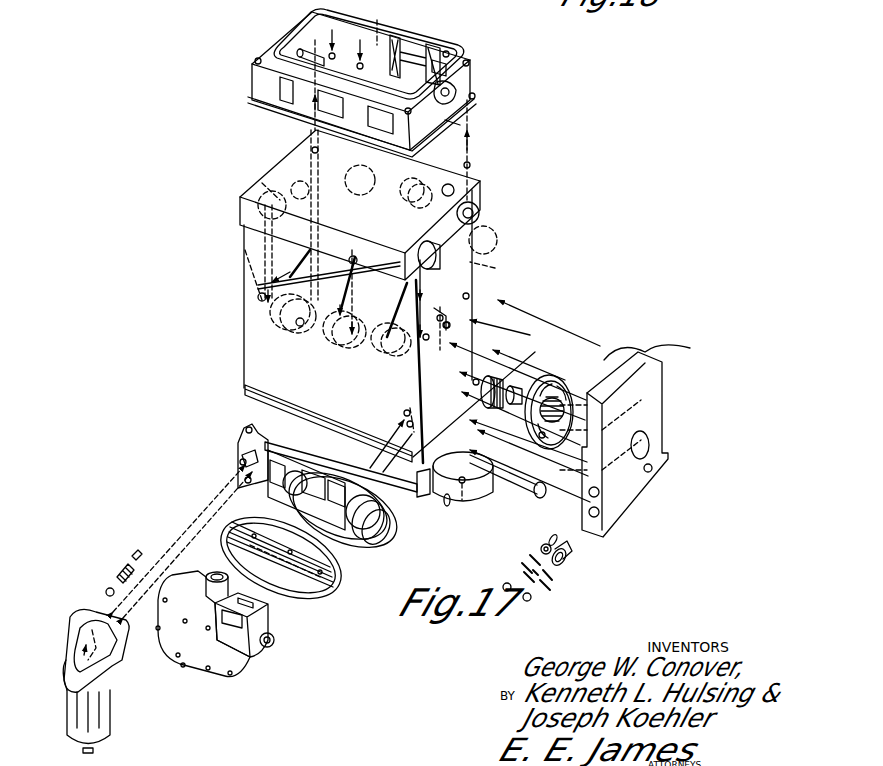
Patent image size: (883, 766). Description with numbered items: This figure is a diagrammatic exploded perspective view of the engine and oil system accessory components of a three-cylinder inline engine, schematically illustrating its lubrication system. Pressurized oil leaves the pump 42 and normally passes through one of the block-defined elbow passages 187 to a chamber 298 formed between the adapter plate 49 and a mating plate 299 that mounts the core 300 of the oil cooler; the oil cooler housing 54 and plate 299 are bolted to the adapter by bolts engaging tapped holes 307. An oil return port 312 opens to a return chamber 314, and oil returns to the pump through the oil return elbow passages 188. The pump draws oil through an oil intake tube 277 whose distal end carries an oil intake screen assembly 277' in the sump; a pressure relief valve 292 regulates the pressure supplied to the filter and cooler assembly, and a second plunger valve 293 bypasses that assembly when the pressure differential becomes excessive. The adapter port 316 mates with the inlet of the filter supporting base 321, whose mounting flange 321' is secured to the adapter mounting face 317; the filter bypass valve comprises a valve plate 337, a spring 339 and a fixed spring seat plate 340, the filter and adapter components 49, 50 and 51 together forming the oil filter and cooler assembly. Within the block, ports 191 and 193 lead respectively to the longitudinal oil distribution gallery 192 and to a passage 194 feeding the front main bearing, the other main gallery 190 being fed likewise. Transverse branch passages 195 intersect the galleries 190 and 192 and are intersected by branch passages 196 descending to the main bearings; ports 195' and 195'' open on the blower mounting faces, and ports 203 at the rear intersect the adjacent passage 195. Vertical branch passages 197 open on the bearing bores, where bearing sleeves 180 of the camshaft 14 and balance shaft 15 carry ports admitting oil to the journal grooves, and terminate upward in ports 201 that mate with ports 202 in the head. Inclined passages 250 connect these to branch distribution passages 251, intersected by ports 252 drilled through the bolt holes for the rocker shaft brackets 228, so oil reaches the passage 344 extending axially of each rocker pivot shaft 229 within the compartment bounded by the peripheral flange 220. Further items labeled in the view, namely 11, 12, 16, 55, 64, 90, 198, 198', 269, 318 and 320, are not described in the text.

The engine block 11 is at (241, 369).
The cover 12 is at (250, 83).
The camshaft 14 is at (472, 204).
The balance shaft 15 is at (360, 205).
The gear 16 is at (503, 404).
The pump 42 is at (670, 414).
The adapter plate 49 is at (235, 448).
The oil filter and cooler assembly component 50 is at (62, 702).
The oil filter and cooler assembly component 51 is at (176, 645).
The oil cooler housing 54 is at (240, 670).
The port 55 is at (255, 612).
The fitting 64 is at (274, 644).
The boss 90 is at (217, 572).
The bearing sleeve 180 is at (270, 190).
The elbow passage 187 is at (422, 483).
The oil return elbow passage 188 is at (404, 412).
The oil distribution gallery 190 is at (470, 295).
The port 191 is at (441, 315).
The oil distribution gallery 192 is at (342, 345).
The port 193 is at (500, 320).
The passage 194 is at (522, 401).
The branch passage 195 is at (332, 320).
The port 195' is at (357, 302).
The port 195'' is at (295, 257).
The branch passage 196 is at (331, 240).
The branch passage 197 is at (262, 185).
The bore 198 is at (361, 181).
The bore 198' is at (398, 183).
The port 201 is at (310, 150).
The port 202 is at (300, 108).
The port 203 is at (248, 250).
The peripheral wall or flange 220 is at (298, 28).
The bracket 228 is at (388, 47).
The pivot shaft 229 is at (446, 62).
The inclined passage 250 is at (266, 44).
The branch distribution passage 251 is at (452, 128).
The port 252 is at (364, 44).
The pump cover 269 is at (547, 391).
The oil intake tube 277 is at (489, 496).
The oil intake screen assembly 277' is at (469, 530).
The pressure relief valve 292 is at (570, 562).
The bypass plunger valve 293 is at (540, 552).
The chamber 298 is at (358, 535).
The mating plate 299 is at (376, 542).
The oil cooler core 300 is at (330, 590).
The tapped hole 307 is at (385, 530).
The oil return port 312 is at (400, 483).
The return chamber 314 is at (378, 512).
The adapter port 316 is at (182, 541).
The adapter mounting face 317 is at (276, 485).
The tab 318 is at (240, 462).
The port 320 is at (298, 471).
The filter supporting base 321 is at (78, 650).
The mounting flange 321' is at (71, 624).
The valve plate 337 is at (108, 589).
The spring 339 is at (122, 568).
The spring seat plate 340 is at (139, 550).
The passage 344 is at (450, 52).